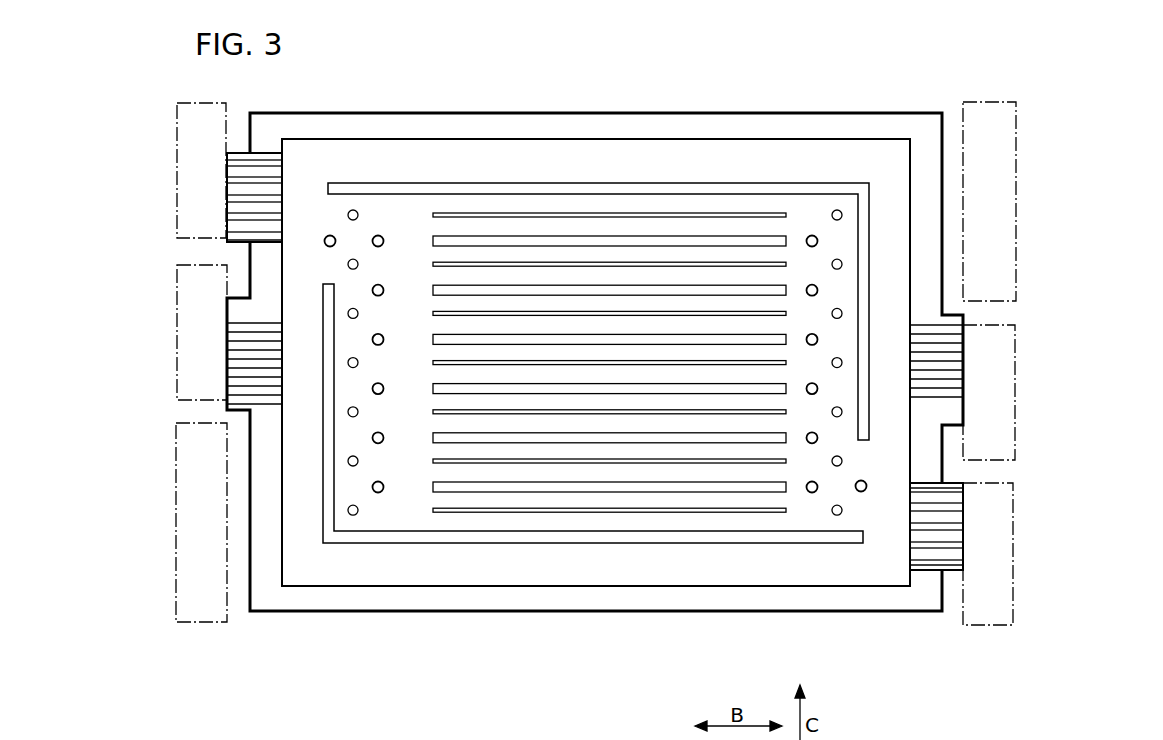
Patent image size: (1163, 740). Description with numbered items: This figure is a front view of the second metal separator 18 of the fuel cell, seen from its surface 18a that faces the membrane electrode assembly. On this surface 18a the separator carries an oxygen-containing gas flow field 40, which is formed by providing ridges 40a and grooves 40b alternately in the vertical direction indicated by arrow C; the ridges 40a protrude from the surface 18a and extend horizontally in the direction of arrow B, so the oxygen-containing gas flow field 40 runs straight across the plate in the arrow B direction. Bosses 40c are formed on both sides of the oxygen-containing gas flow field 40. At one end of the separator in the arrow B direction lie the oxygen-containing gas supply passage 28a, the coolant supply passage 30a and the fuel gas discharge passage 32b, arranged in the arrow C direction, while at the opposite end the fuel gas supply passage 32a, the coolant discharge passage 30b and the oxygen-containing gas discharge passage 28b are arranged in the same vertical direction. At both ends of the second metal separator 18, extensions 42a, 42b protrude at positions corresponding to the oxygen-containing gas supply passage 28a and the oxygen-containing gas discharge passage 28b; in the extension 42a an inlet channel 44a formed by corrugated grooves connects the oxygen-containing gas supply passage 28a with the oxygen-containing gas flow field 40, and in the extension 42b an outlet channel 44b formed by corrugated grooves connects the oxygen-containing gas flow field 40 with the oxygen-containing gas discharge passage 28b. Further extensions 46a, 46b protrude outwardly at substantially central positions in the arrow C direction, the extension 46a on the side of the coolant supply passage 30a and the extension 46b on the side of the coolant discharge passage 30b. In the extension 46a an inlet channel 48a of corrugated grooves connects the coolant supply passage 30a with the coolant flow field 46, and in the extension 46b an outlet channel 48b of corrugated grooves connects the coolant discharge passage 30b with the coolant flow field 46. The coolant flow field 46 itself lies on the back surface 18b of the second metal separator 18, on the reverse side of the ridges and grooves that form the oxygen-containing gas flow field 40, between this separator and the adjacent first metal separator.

The second metal separator 18 is at (726, 78).
The surface 18a is at (813, 606).
The surface 18b is at (750, 612).
The oxygen-containing gas supply passage 28a is at (201, 181).
The oxygen-containing gas discharge passage 28b is at (994, 545).
The coolant supply passage 30a is at (200, 332).
The coolant discharge passage 30b is at (990, 395).
The fuel gas supply passage 32a is at (989, 201).
The fuel gas discharge passage 32b is at (201, 522).
The oxygen-containing gas flow field 40 is at (680, 207).
The ridges 40a is at (508, 238).
The grooves 40b is at (617, 267).
The bosses 40c is at (812, 235).
The extension 42a is at (243, 150).
The extension 42b is at (946, 573).
The inlet channel 44a is at (227, 232).
The outlet channel 44b is at (963, 528).
The coolant flow field 46 is at (553, 462).
The extension 46a is at (233, 315).
The extension 46b is at (955, 412).
The inlet channel 48a is at (227, 385).
The outlet channel 48b is at (963, 375).